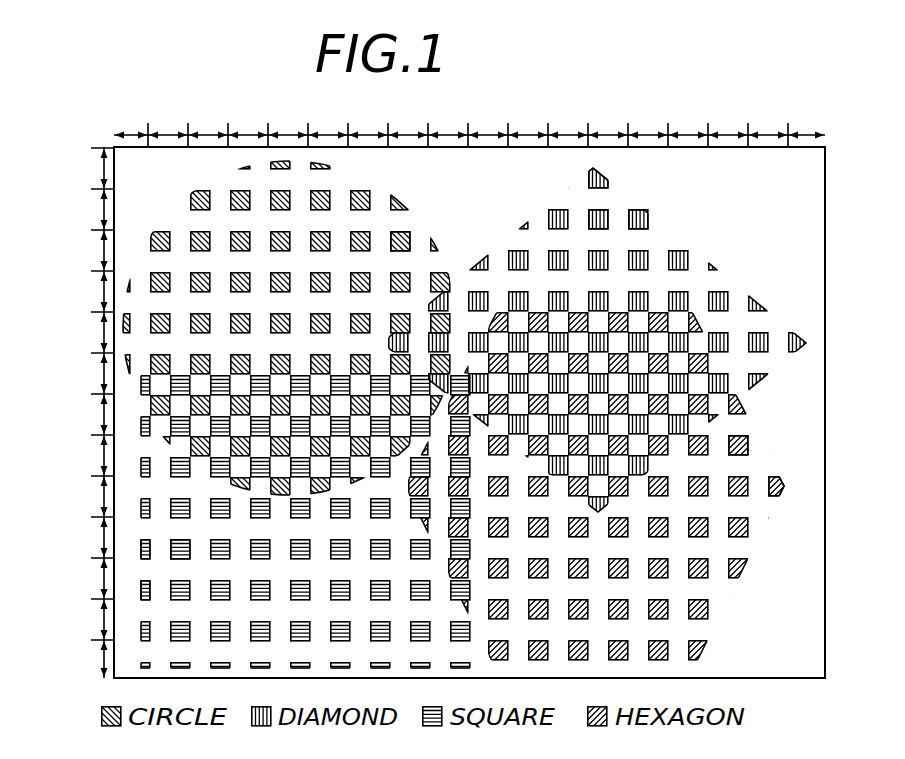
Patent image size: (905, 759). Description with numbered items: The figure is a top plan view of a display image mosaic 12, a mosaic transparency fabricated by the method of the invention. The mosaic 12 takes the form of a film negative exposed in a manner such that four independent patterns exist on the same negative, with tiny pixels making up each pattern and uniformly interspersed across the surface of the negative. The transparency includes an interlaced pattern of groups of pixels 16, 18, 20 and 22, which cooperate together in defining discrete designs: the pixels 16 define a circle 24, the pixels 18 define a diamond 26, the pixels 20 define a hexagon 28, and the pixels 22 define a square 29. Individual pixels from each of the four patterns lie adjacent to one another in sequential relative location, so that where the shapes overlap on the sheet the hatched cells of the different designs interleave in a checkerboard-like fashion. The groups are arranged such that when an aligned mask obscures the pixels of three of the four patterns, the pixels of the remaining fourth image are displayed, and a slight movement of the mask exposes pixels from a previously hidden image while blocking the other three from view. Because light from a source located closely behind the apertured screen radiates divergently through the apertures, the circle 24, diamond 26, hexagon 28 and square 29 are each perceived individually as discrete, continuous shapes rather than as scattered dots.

The display image mosaic 12 is at (827, 596).
The group of pixels 16 is at (409, 236).
The group of pixels 18 is at (631, 208).
The group of pixels 20 is at (768, 480).
The group of pixels 22 is at (172, 557).
The circle 24 is at (408, 202).
The diamond 26 is at (672, 239).
The hexagon 28 is at (749, 503).
The square 29 is at (134, 538).